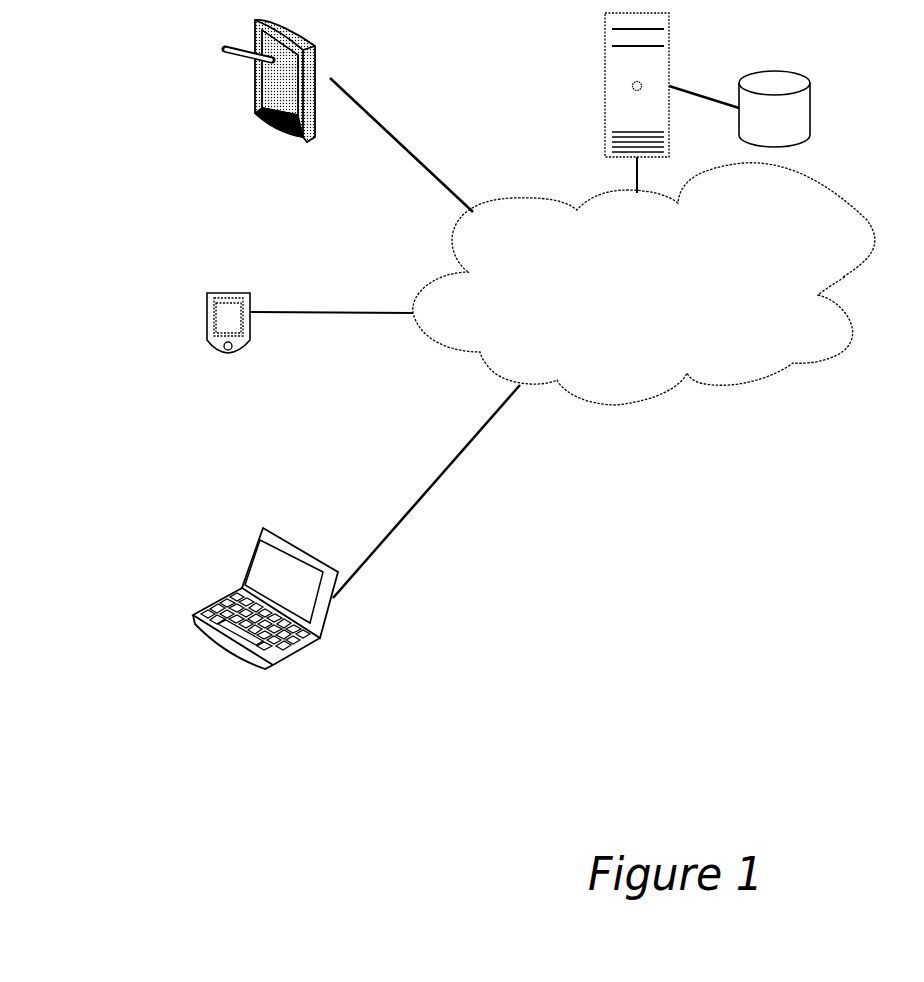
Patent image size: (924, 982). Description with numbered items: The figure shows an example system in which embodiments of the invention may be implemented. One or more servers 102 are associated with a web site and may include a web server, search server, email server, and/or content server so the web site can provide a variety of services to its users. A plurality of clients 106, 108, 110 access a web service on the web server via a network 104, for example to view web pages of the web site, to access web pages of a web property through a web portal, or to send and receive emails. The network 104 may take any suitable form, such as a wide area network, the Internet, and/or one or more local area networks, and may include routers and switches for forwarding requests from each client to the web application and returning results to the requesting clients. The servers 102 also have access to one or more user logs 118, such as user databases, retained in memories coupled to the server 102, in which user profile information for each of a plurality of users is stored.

The server 102 is at (673, 38).
The network 104 is at (644, 284).
The client 106 is at (219, 62).
The client 108 is at (200, 307).
The client 110 is at (220, 583).
The user log 118 is at (823, 107).